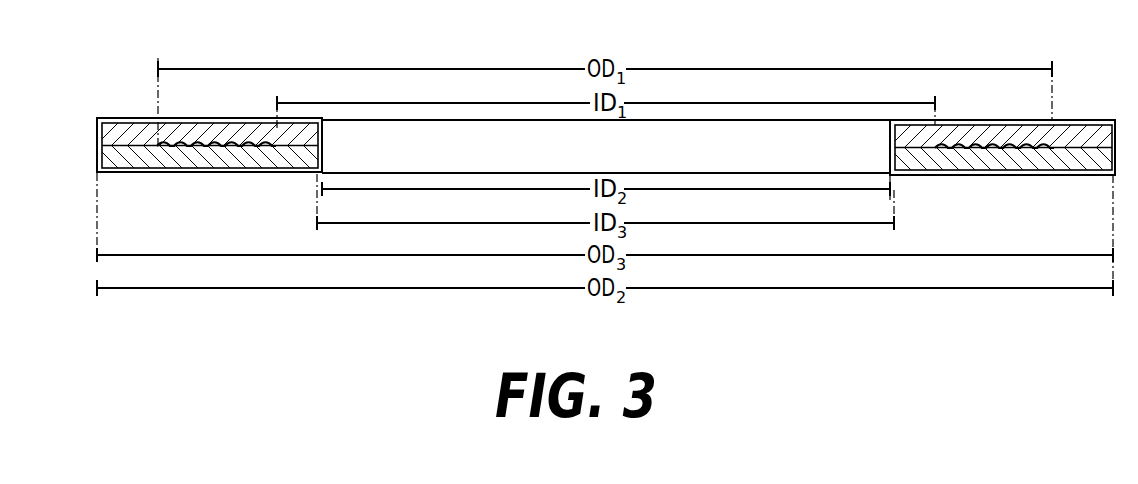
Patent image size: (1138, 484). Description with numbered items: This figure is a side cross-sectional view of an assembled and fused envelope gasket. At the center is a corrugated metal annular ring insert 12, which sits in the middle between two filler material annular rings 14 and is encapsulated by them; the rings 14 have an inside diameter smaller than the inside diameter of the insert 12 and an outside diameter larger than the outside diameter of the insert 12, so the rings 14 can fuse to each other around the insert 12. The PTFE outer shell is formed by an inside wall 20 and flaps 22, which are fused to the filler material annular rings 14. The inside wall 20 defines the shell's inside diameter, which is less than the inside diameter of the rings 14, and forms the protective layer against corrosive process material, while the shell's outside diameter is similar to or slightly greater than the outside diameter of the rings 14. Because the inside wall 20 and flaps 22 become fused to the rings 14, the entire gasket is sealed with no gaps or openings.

The corrugated metal annular ring insert 12 is at (198, 143).
The filler material annular rings 14 is at (105, 138).
The inside wall 20 is at (352, 132).
The flaps 22 is at (121, 120).